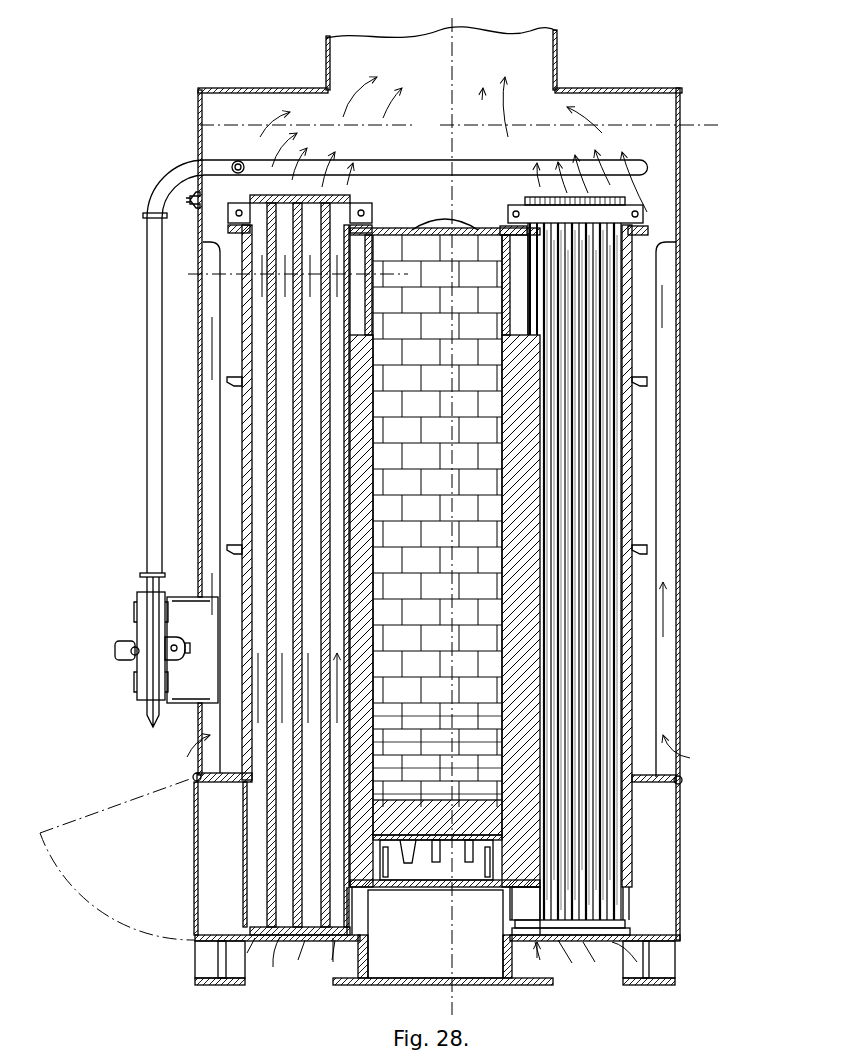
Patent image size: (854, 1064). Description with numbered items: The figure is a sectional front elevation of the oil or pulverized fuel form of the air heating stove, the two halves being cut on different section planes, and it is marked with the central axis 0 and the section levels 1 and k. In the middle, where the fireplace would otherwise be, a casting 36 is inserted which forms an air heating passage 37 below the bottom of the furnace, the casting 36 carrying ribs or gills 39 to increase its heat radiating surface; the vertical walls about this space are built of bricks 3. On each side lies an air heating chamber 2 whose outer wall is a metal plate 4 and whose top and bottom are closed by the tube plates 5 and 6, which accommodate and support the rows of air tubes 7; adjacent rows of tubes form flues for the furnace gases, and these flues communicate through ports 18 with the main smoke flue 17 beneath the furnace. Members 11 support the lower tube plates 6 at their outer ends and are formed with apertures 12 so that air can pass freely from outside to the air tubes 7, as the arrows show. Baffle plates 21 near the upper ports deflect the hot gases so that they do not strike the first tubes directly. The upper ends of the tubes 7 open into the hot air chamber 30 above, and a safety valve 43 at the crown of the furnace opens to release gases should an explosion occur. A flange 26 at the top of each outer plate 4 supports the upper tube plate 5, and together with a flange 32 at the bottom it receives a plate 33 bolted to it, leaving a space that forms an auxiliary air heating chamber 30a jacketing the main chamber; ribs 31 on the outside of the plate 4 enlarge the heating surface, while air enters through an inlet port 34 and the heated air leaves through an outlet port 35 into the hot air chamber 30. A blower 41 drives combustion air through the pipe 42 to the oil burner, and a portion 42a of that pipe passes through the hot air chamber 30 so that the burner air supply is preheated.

The center section line 0 is at (448, 518).
The central fireplace 1 is at (460, 136).
The section line k- k is at (295, 277).
The air heating chambers 2 is at (280, 438).
The bricks 3 is at (365, 373).
The metal plates 4 is at (243, 487).
The top tube plate 5 is at (240, 202).
The bottom tube plate 6 is at (267, 937).
The air tubes 7 is at (333, 360).
The members 11 is at (218, 985).
The apertures 12 is at (220, 955).
The main smoke flue 17 is at (443, 932).
The ports 18 is at (355, 935).
The baffle plates 21 is at (368, 303).
The flange 26 is at (210, 230).
The hot air chamber 30 is at (655, 137).
The auxiliary air heating chambers 30a is at (682, 623).
The ribs 31 is at (232, 382).
The flanges 32 is at (195, 774).
The plates 33 is at (198, 380).
The inlet ports 34 is at (202, 742).
The outlet ports 35 is at (218, 227).
The casting 36 is at (410, 855).
The air heating passage 37 is at (438, 855).
The ribs 39 is at (470, 855).
The blower 41 is at (152, 625).
The pipe 42 is at (155, 243).
The pipe portion 42a is at (322, 166).
The safety valve 43 is at (460, 230).